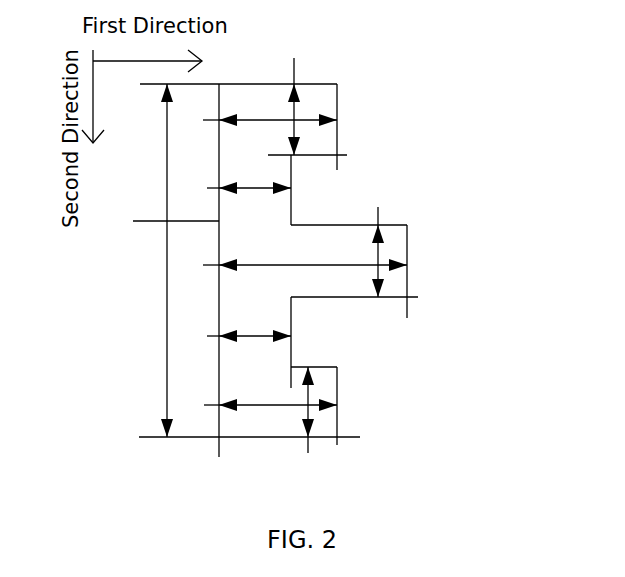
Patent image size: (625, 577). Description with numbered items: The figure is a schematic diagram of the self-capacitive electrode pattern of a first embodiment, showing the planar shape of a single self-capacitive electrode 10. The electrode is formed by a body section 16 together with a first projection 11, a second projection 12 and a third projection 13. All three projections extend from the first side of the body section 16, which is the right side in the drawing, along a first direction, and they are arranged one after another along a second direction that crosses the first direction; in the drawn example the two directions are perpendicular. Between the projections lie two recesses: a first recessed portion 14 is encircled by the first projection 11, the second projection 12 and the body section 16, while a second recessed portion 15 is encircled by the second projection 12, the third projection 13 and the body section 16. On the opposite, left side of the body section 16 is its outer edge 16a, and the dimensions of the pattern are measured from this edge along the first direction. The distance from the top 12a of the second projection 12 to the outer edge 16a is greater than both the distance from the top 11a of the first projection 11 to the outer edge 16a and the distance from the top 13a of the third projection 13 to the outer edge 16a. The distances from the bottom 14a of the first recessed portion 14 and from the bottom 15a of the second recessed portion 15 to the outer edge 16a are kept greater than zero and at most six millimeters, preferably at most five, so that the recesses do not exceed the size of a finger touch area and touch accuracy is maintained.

The self-capacitive electrode 10 is at (510, 27).
The first projection 11 is at (322, 105).
The top of the first projection 11a is at (338, 90).
The second projection 12 is at (396, 283).
The top of the second projection 12a is at (407, 242).
The third projection 13 is at (322, 380).
The top of the third projection 13a is at (337, 427).
The first recessed portion 14 is at (321, 192).
The bottom of the first recessed portion 14a is at (288, 181).
The second recessed portion 15 is at (312, 341).
The bottom of the second recessed portion 15a is at (290, 312).
The body section 16 is at (237, 380).
The outer edge 16a is at (151, 225).